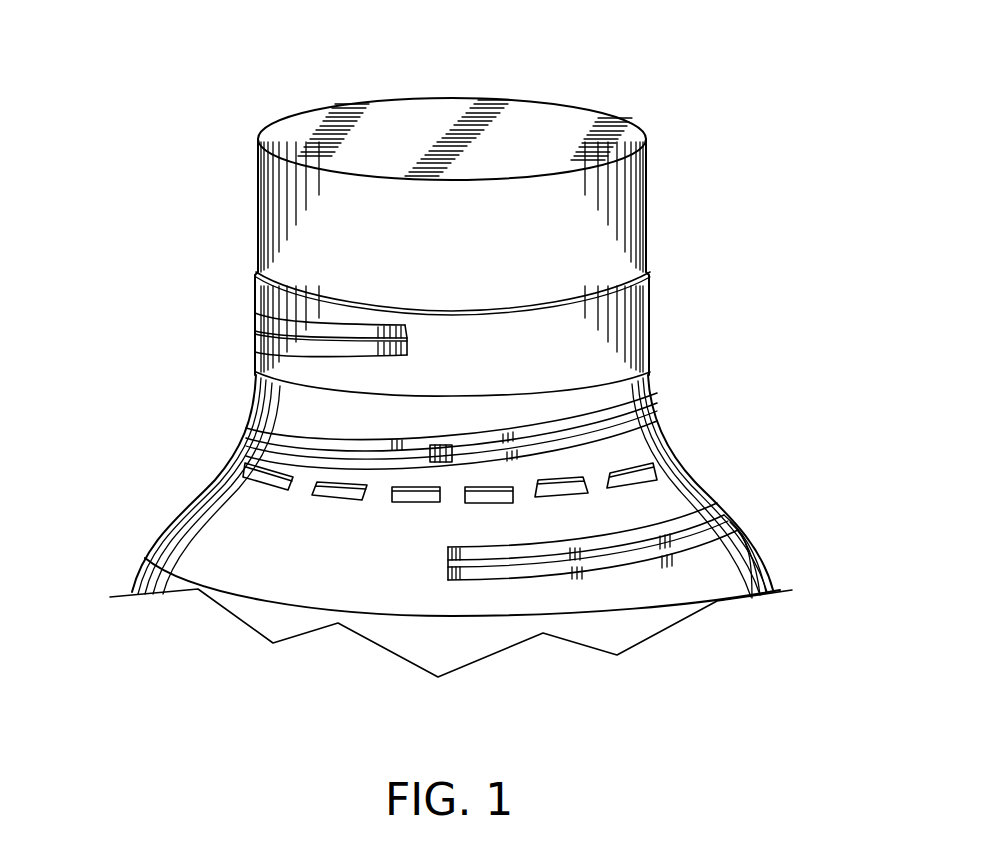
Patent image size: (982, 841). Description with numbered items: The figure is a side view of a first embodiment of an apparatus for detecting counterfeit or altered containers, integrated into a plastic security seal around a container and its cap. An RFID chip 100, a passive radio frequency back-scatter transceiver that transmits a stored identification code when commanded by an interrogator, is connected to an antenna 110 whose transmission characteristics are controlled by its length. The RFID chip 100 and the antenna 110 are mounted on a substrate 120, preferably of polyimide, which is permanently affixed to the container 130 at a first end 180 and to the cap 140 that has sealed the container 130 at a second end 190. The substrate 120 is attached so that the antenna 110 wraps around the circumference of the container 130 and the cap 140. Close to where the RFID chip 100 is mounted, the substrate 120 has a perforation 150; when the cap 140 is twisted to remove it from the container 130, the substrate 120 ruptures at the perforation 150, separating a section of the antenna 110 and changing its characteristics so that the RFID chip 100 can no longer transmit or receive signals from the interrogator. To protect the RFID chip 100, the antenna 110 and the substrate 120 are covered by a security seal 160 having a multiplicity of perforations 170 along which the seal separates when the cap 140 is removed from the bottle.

The RFID chip 100 is at (430, 462).
The antenna 110 is at (720, 507).
The substrate 120 is at (645, 390).
The container 130 is at (148, 575).
The cap 140 is at (647, 226).
The perforation 150 is at (405, 443).
The security seal 160 is at (647, 325).
The perforations 170 is at (653, 467).
The first end 180 is at (448, 567).
The second end 190 is at (402, 332).